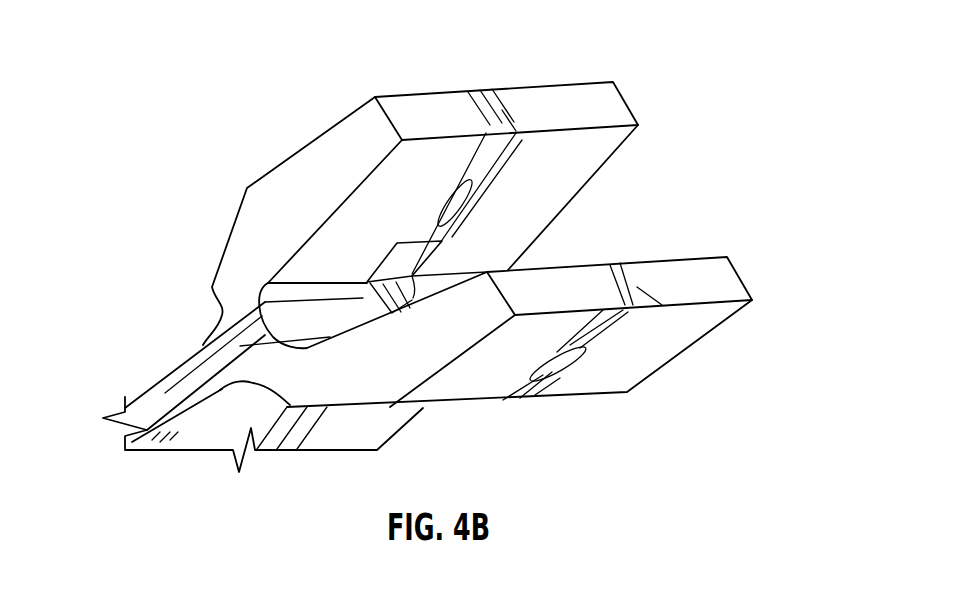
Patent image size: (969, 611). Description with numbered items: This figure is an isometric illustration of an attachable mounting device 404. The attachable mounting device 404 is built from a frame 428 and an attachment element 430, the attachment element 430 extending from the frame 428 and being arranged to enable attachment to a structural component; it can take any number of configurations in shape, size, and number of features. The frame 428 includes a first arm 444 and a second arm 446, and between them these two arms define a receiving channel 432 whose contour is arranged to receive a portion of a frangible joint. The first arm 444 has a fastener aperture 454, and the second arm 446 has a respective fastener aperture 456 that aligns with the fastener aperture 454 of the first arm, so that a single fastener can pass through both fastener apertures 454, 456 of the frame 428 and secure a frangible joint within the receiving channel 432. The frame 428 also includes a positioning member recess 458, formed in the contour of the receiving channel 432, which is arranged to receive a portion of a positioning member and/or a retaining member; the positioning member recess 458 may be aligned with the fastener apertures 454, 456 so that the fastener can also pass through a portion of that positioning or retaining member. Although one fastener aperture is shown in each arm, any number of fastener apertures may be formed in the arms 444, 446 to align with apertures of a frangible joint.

The attachable mounting device 404 is at (138, 240).
The frame 428 is at (240, 180).
The attachment element 430 is at (167, 390).
The receiving channel 432 is at (694, 203).
The first arm 444 is at (320, 157).
The second arm 446 is at (672, 328).
The fastener aperture 454 is at (470, 203).
The fastener aperture 456 is at (560, 372).
The positioning member recess 458 is at (372, 283).